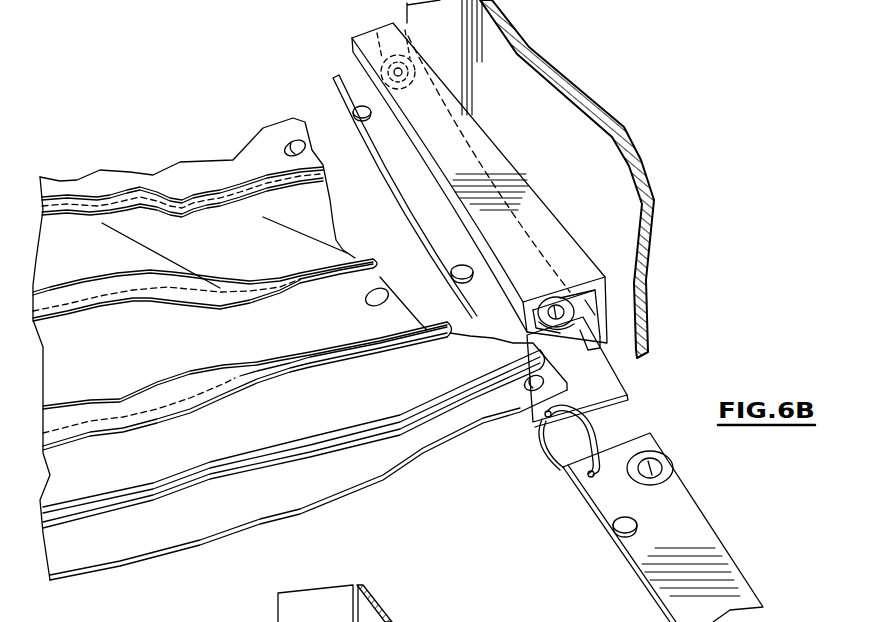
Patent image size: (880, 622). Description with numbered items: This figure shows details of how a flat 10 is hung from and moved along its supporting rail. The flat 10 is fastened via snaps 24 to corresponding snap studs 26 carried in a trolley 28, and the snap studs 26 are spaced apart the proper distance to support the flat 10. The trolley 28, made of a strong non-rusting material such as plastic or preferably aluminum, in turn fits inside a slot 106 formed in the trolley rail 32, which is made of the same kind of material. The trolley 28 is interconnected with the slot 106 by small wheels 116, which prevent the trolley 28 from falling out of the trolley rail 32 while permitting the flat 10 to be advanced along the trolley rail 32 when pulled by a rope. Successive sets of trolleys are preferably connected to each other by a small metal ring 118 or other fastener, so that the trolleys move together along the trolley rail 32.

The flat 10 is at (128, 178).
The snaps 24 is at (292, 140).
The snap studs 26 is at (358, 100).
The trolley 28 is at (612, 390).
The trolley rail 32 is at (540, 210).
The slot 106 is at (593, 307).
The small wheels 116 is at (375, 32).
The small metal ring 118 is at (565, 483).